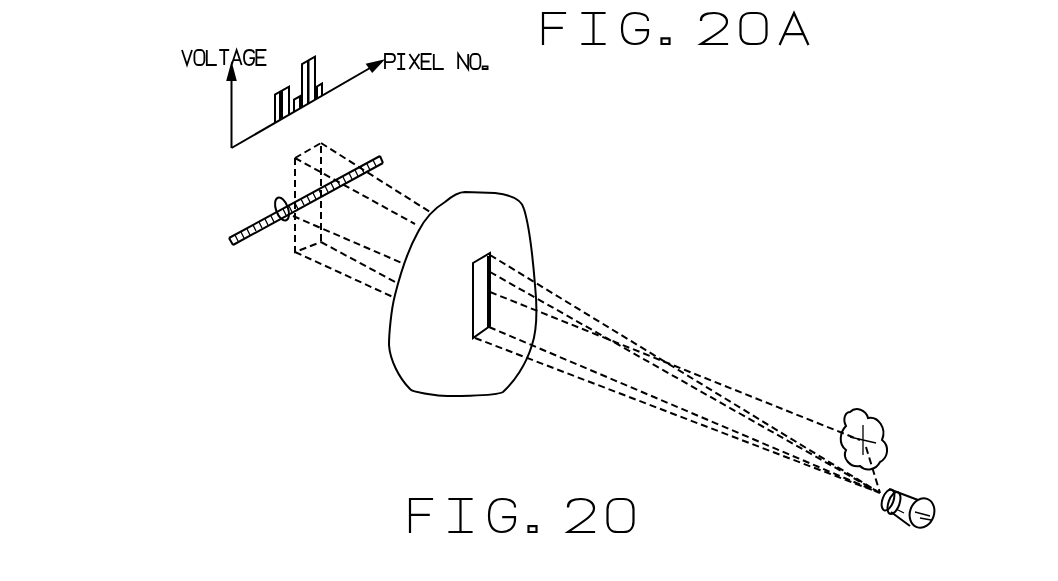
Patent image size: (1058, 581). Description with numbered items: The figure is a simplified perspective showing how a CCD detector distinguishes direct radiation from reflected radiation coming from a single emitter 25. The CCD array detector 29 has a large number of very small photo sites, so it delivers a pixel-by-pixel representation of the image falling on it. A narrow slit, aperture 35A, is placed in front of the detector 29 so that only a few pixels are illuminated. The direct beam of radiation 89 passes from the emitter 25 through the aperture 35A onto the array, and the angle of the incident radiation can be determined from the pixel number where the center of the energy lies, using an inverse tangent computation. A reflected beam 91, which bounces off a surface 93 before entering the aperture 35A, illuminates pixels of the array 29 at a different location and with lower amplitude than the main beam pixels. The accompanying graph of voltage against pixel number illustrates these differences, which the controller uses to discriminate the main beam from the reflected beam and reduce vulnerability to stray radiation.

In FIG. 20, the emitter 25 is at (912, 498).
In FIG. 20, the detector 29 is at (385, 158).
In FIG. 20, the aperture 35A is at (473, 308).
In FIG. 20A, the direct beam of radiation 89 is at (318, 77).
In FIG. 20, the direct beam of radiation 89 is at (414, 203).
In FIG. 20A, the reflected beam 91 is at (278, 87).
In FIG. 20, the reflected beam 91 is at (284, 222).
In FIG. 20, the surface 93 is at (872, 422).